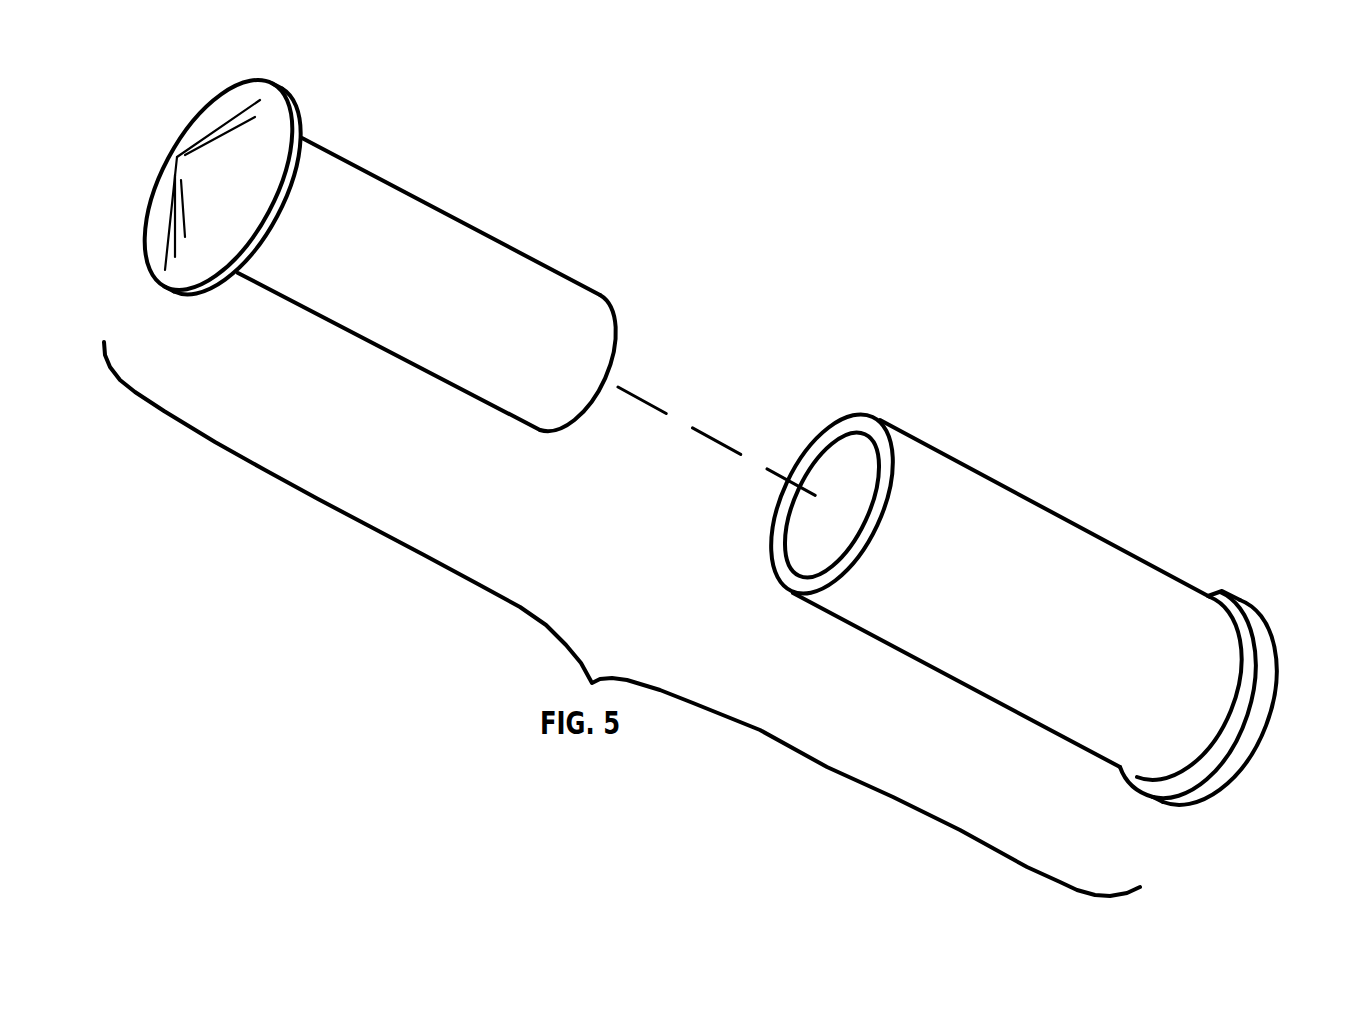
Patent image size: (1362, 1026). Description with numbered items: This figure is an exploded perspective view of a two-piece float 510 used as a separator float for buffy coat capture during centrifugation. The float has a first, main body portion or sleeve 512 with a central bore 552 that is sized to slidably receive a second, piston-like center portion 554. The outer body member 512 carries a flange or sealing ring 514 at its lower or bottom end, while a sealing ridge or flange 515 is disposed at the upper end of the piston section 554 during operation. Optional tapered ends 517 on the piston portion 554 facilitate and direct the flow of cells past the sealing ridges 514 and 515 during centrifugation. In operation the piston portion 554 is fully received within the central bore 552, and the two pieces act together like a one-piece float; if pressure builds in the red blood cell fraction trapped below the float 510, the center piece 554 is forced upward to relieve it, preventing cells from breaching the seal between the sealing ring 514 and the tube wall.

The two-piece float 510 is at (213, 117).
The sealing ridge 515 is at (293, 127).
The piston-like center portion 554 is at (425, 203).
The tapered ends 517 is at (618, 348).
The sleeve 512 is at (1053, 505).
The central bore 552 is at (850, 477).
The sealing ring 514 is at (1263, 618).